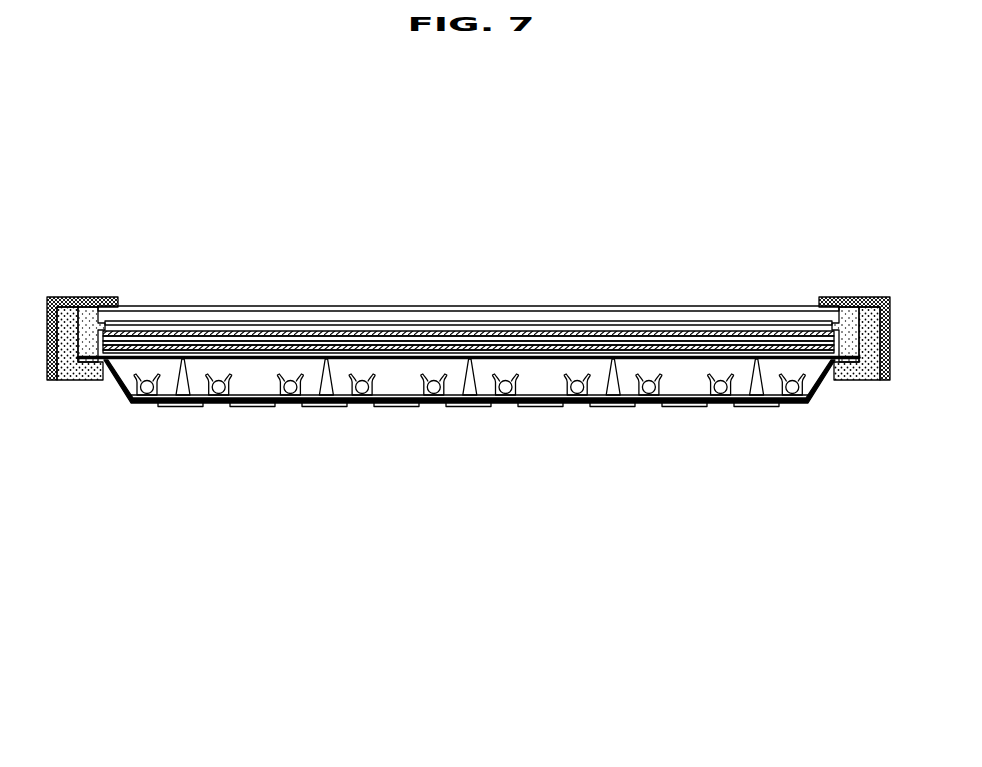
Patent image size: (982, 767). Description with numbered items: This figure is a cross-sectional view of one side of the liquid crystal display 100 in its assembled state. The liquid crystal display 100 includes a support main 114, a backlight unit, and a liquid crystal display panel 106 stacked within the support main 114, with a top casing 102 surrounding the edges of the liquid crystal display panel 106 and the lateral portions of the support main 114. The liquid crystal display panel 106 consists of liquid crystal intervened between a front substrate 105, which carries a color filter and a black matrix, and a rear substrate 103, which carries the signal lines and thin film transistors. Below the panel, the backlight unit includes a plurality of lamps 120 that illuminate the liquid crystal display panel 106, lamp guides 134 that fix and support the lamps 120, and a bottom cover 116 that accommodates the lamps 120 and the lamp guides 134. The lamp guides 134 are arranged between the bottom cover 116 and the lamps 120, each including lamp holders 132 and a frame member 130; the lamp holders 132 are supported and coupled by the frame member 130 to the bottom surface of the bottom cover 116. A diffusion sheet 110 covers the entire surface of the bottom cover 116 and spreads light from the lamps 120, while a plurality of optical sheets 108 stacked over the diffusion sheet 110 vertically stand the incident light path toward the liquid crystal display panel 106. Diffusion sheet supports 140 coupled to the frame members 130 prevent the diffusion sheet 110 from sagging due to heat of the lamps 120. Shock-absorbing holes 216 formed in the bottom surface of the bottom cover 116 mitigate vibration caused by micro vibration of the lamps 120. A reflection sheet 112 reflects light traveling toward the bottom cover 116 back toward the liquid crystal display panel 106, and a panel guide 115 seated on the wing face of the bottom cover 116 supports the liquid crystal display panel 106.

The liquid crystal display 100 is at (101, 167).
The top casing 102 is at (78, 297).
The rear substrate 103 is at (287, 229).
The front substrate 105 is at (283, 308).
The liquid crystal display panel 106 is at (468, 260).
The optical sheets 108 is at (543, 347).
The diffusion sheet 110 is at (668, 356).
The reflection sheet 112 is at (222, 398).
The support main 114 is at (870, 298).
The panel guide 115 is at (849, 300).
The bottom cover 116 is at (393, 403).
The lamps 120 is at (573, 397).
The frame member 130 is at (537, 400).
The lamp holders 132 is at (493, 393).
The lamp guides 134 is at (469, 455).
The diffusion sheet supports 140 is at (617, 380).
The shock-absorbing holes 216 is at (716, 410).